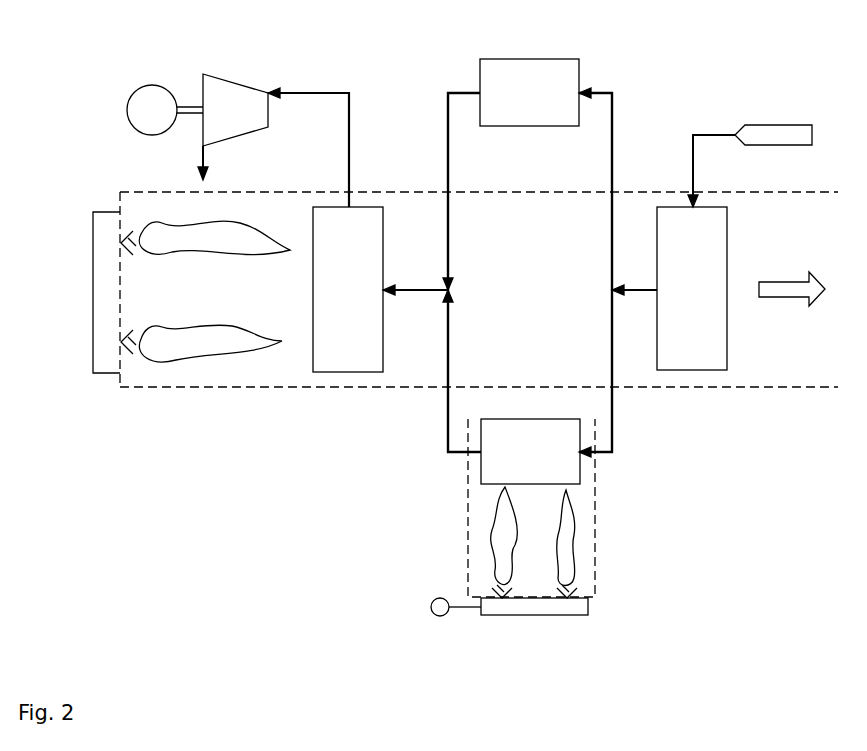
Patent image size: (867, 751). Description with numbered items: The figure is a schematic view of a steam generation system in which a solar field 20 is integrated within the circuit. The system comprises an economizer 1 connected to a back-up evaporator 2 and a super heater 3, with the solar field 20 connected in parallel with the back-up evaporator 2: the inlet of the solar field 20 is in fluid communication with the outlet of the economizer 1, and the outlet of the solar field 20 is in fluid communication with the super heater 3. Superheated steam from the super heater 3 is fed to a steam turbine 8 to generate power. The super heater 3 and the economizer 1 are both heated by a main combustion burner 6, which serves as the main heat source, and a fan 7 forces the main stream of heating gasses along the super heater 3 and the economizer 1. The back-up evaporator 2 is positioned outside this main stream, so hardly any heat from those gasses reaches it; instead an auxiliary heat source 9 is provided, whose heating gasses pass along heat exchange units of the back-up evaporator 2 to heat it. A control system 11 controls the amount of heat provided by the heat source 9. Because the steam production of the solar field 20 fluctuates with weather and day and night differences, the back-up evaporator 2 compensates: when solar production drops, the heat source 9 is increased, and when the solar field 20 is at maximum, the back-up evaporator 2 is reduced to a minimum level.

The economizer 1 is at (741, 247).
The back-up evaporator 2 is at (531, 508).
The super heater 3 is at (325, 230).
The main combustion burner 6 is at (135, 352).
The fan 7 is at (105, 322).
The steam turbine 8 is at (232, 102).
The auxiliary heat source 9 is at (568, 593).
The control system 11 is at (493, 608).
The solar field 20 is at (530, 258).